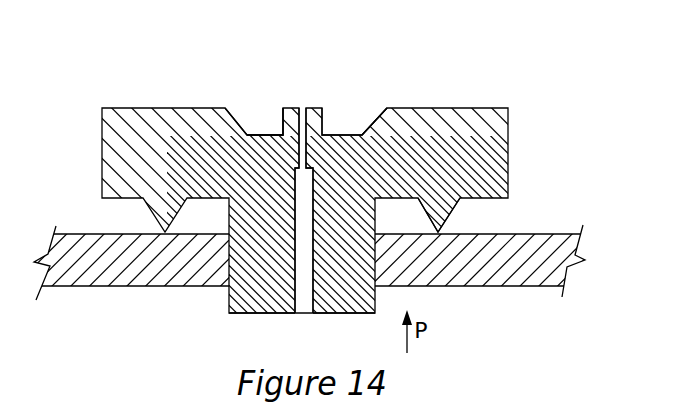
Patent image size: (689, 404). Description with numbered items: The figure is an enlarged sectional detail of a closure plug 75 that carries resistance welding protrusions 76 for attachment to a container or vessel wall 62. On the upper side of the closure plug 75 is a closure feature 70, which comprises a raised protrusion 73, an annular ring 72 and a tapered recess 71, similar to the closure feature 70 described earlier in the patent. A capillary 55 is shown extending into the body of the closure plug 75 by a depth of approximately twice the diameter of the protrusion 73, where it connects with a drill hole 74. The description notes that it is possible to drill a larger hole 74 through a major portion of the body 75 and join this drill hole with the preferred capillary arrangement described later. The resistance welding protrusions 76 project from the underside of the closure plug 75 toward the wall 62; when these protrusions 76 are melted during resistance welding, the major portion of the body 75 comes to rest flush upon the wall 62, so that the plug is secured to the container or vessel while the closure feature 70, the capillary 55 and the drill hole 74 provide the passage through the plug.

The capillary 55 is at (289, 129).
The wall 62 is at (507, 278).
The closure feature 70 is at (291, 75).
The tapered recess 71 is at (379, 113).
The annular ring 72 is at (346, 133).
The raised protrusion 73 is at (287, 108).
The drill hole 74 is at (335, 312).
The closure plug 75 is at (500, 120).
The resistance welding protrusions 76 is at (452, 213).